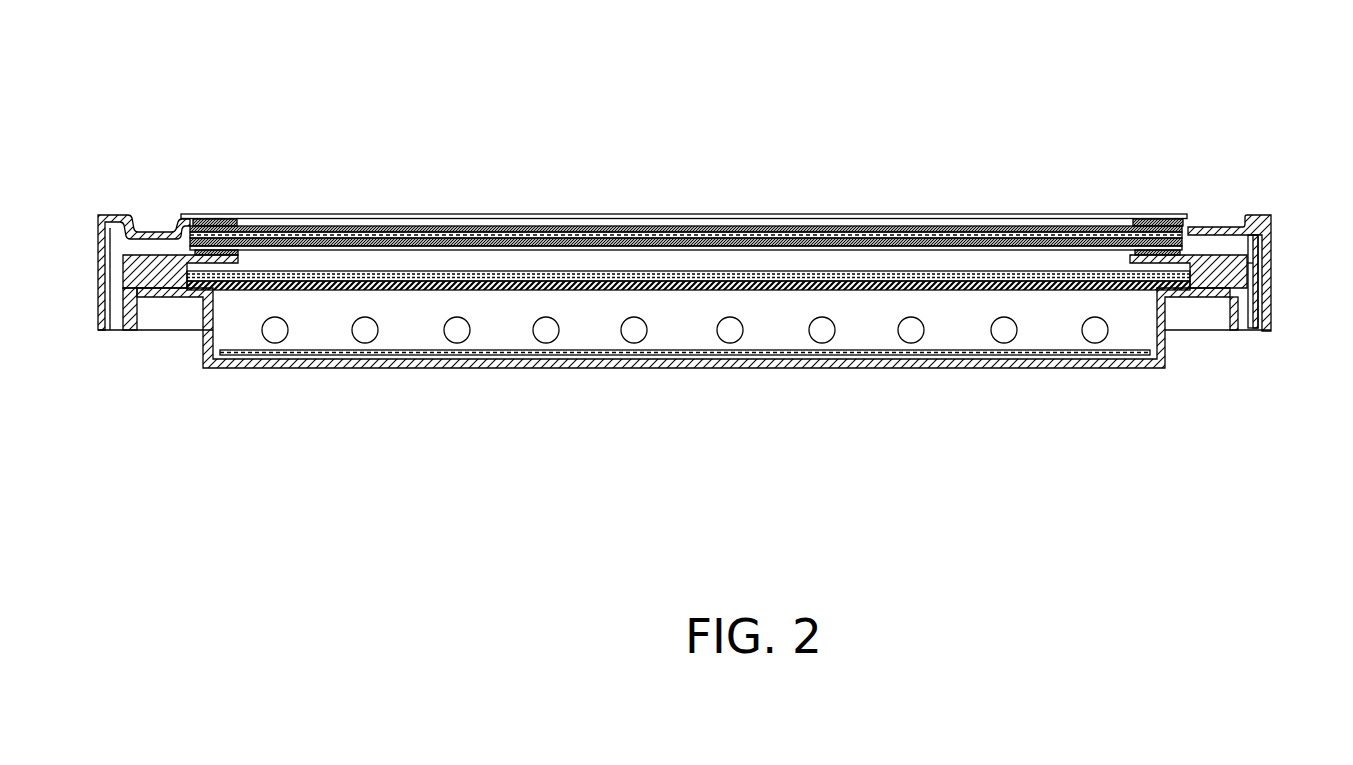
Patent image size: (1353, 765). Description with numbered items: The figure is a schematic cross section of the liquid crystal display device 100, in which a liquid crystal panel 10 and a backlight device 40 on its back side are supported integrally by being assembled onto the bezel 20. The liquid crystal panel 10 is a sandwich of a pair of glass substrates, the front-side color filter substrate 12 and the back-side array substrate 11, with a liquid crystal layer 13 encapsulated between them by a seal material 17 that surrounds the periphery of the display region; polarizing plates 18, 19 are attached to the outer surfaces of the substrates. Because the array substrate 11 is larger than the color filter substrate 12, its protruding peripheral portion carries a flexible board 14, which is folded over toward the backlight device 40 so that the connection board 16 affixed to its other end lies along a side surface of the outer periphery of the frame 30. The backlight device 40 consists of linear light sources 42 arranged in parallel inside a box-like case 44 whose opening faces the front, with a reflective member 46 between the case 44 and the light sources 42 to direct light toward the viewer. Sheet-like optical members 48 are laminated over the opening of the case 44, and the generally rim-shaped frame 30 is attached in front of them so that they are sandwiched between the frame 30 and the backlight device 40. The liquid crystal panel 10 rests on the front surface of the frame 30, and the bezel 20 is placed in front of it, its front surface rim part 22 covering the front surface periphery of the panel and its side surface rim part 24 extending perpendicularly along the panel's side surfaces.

The liquid crystal display device 100 is at (1147, 112).
The liquid crystal panel 10 is at (686, 194).
The array substrate 11 is at (548, 242).
The color filter substrate 12 is at (410, 226).
The liquid crystal layer 13 is at (470, 233).
The flexible board 14 is at (1273, 237).
The connection board 16 is at (1263, 283).
The seal material 17 is at (197, 217).
The polarizing plate 18 is at (712, 250).
The polarizing plate 19 is at (312, 214).
The bezel 20 is at (112, 215).
The front surface rim part 22 is at (1145, 218).
The side surface rim part 24 is at (1270, 310).
The frame 30 is at (150, 255).
The backlight device 40 is at (1176, 360).
The light sources 42 is at (627, 343).
The case 44 is at (295, 372).
The reflective member 46 is at (680, 345).
The optical members 48 is at (890, 290).